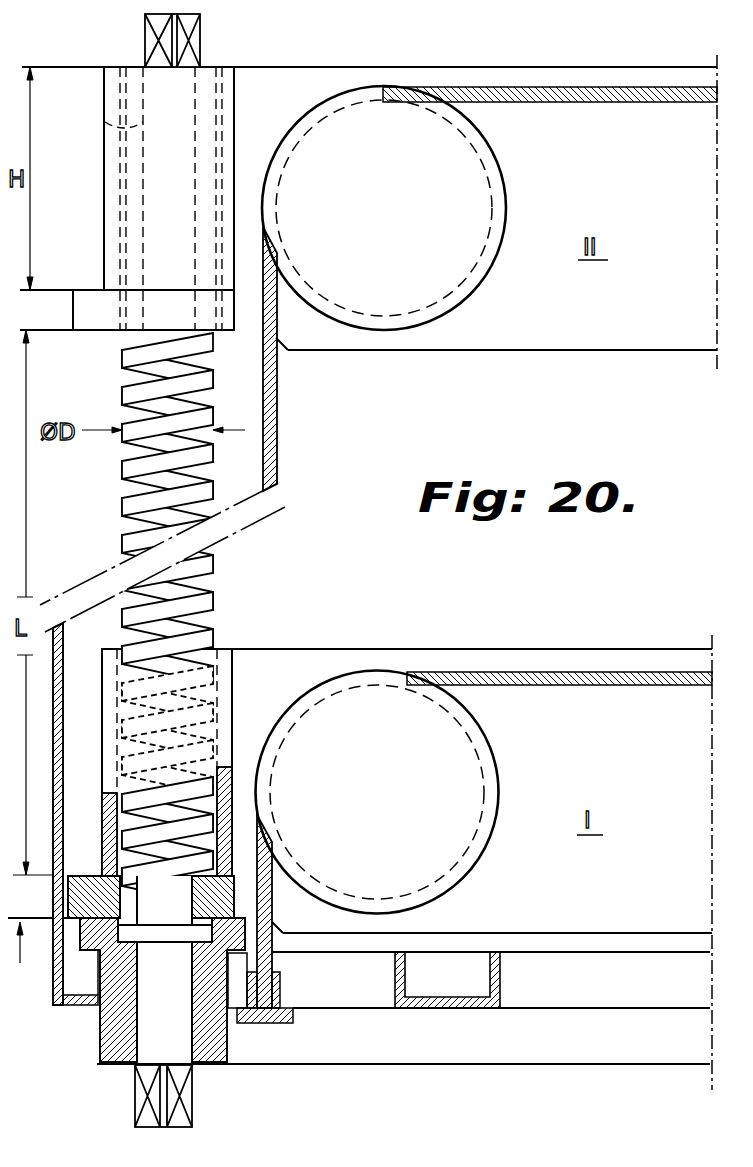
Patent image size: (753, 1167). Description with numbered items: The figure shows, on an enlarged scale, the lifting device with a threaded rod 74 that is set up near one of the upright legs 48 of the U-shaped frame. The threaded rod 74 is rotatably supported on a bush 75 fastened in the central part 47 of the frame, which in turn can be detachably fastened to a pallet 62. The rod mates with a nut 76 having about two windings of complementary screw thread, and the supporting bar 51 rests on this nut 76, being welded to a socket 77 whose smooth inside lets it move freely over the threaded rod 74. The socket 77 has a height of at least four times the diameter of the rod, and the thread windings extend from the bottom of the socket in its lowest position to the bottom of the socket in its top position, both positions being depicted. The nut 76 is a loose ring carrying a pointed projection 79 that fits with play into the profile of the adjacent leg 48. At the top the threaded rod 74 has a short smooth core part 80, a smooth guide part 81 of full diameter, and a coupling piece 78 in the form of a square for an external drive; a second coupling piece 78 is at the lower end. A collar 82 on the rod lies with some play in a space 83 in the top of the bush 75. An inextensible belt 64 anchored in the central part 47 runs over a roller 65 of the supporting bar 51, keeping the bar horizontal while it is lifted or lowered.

The central part 47 is at (395, 993).
The upright leg 48 is at (53, 750).
The supporting bar 51 is at (308, 337).
The pallet 62 is at (483, 1055).
The belt 64 is at (603, 93).
The roller 65 is at (483, 183).
The threaded rod 74 is at (122, 471).
The bush 75 is at (100, 1029).
The nut 76 is at (228, 313).
The socket 77 is at (115, 179).
The coupling piece 78 is at (145, 35).
The pointed projection 79 is at (88, 302).
The smooth core part 80 is at (172, 307).
The smooth guide part 81 is at (105, 122).
The collar 82 is at (163, 935).
The space 83 is at (88, 953).